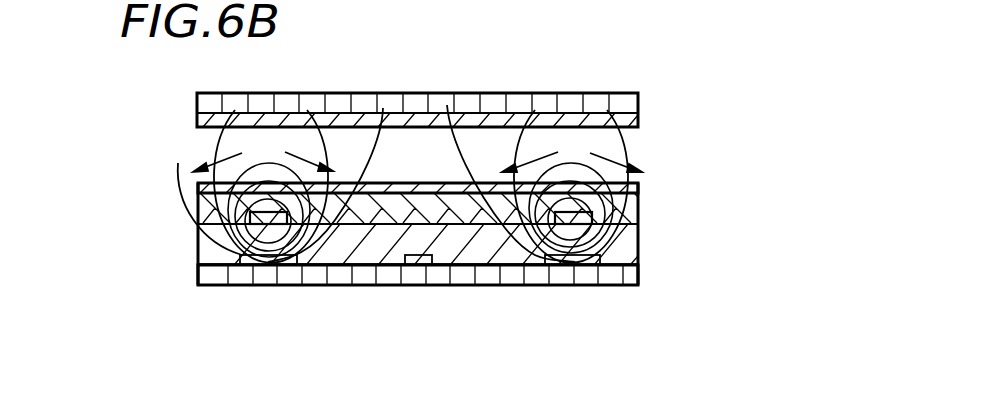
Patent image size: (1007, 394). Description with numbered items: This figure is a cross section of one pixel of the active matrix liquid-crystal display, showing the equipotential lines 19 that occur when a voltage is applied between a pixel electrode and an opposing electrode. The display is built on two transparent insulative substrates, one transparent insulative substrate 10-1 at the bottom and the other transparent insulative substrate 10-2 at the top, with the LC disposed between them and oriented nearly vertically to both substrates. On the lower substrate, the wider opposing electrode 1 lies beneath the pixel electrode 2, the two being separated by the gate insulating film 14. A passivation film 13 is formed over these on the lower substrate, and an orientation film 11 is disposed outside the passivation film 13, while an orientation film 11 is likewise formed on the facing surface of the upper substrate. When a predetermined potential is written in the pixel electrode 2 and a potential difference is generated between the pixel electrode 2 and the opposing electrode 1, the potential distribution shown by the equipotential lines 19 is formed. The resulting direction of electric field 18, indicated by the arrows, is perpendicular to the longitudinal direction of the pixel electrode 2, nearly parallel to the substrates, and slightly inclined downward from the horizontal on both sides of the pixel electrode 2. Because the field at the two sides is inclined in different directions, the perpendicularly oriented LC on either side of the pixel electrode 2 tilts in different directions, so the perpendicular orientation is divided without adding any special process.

The opposing electrode 1 is at (285, 265).
The pixel electrode 2 is at (258, 220).
The one transparent insulative substrate 10-1 is at (612, 285).
The other transparent insulative substrate 10-2 is at (627, 105).
The orientation film 11 is at (632, 218).
The passivation film 13 is at (627, 212).
The gate insulating film 14 is at (627, 242).
The direction of electric field 18 is at (345, 93).
The equipotential lines 19 is at (178, 172).